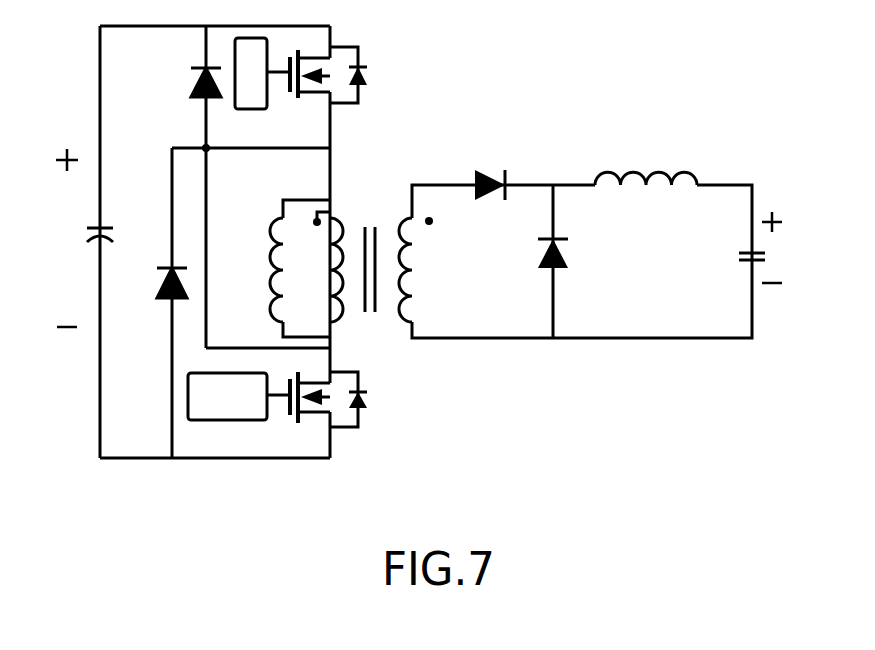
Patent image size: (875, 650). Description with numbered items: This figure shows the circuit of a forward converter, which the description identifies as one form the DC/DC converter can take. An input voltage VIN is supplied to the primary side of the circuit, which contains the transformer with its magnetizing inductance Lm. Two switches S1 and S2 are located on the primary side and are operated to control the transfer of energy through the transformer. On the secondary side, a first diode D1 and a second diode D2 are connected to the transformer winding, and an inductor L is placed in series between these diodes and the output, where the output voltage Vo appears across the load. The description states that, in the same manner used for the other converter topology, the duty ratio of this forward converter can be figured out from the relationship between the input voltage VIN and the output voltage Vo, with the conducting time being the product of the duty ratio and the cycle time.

The first switch (MOSFET with PWM driver) S1 is at (277, 410).
The second switch (MOSFET with PWM driver) S2 is at (301, 86).
The first output diode D1 is at (494, 205).
The second output diode D2 is at (530, 276).
The output inductor L is at (646, 150).
The transformer magnetizing inductance (primary winding) Lm is at (284, 270).
The input voltage VIN is at (73, 238).
The output voltage (output capacitor) Vo is at (786, 247).